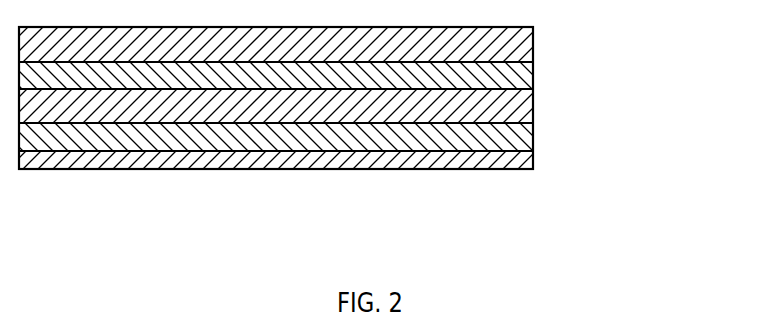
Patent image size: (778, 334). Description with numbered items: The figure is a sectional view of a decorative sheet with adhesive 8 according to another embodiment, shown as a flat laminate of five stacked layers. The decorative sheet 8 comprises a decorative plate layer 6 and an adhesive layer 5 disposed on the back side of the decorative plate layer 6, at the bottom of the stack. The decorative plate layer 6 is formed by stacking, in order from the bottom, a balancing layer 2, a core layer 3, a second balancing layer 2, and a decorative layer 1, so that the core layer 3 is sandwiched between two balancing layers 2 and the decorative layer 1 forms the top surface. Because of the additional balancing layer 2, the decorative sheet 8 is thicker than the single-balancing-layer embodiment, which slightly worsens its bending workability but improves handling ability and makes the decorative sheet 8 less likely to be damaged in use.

The decorative layer 1 is at (500, 47).
The balancing layer 2 is at (500, 80).
The core layer 3 is at (500, 115).
The adhesive layer 5 is at (500, 162).
The decorative plate layer 6 is at (700, 25).
The decorative sheet with adhesive 8 is at (232, 181).